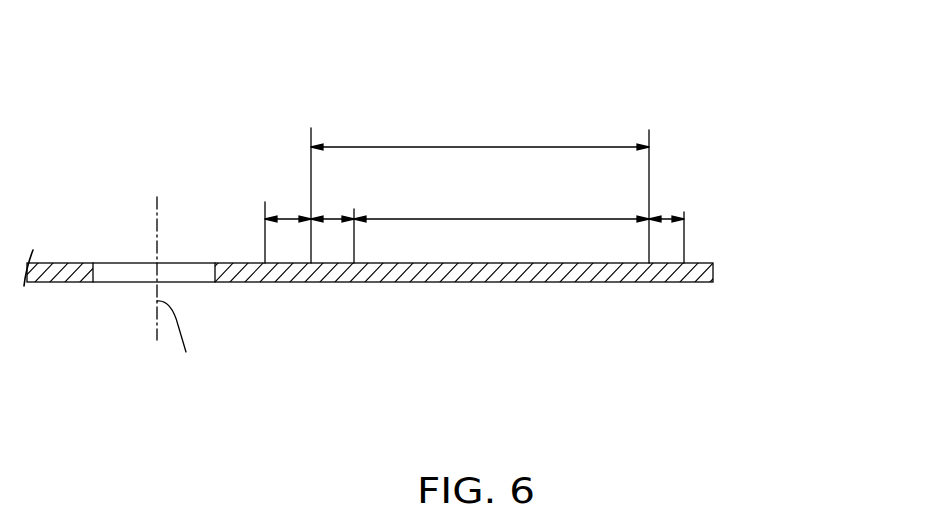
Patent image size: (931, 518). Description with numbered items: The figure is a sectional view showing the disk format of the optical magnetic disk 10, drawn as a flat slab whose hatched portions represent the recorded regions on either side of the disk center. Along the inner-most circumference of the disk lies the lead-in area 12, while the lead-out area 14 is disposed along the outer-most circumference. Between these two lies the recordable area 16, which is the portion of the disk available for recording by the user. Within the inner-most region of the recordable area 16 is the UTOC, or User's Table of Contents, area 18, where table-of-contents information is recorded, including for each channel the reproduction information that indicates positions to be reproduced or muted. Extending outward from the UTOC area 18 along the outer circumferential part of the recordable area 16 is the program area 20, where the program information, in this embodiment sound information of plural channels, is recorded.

The optical magnetic disk 10 is at (458, 296).
The lead-in area 12 is at (288, 217).
The lead-out area 14 is at (667, 219).
The recordable area 16 is at (493, 147).
The UTOC area 18 is at (330, 217).
The program area 20 is at (460, 217).